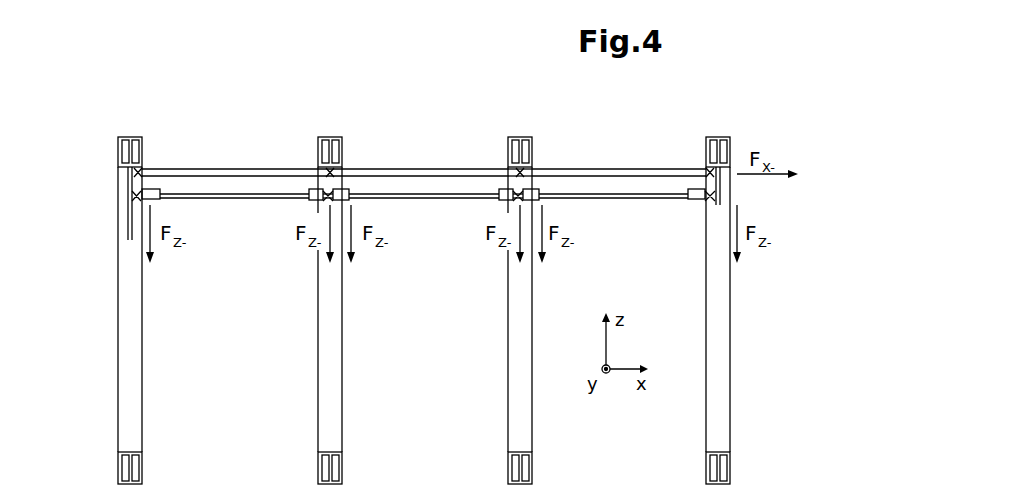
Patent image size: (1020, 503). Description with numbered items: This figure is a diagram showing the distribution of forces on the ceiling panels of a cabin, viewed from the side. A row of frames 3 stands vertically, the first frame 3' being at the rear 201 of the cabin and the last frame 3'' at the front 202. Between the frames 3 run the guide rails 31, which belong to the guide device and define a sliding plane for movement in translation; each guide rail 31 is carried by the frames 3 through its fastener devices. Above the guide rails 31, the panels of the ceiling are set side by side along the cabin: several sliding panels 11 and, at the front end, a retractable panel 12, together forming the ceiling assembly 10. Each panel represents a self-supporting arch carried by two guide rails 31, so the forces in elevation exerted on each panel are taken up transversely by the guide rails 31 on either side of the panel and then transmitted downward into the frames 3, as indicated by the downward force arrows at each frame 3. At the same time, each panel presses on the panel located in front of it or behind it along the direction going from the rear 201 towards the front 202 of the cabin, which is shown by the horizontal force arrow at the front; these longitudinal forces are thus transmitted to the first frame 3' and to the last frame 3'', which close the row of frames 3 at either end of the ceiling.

The frame 3 is at (426, 310).
The first frame 3' is at (98, 310).
The last frame 3'' is at (752, 310).
The upper guide rail / beam 10 is at (424, 132).
The sliding panel 11 is at (245, 169).
The retractable panel 12 is at (645, 169).
The guide rail 31 is at (256, 198).
The rear 201 is at (86, 326).
The front 202 is at (803, 326).